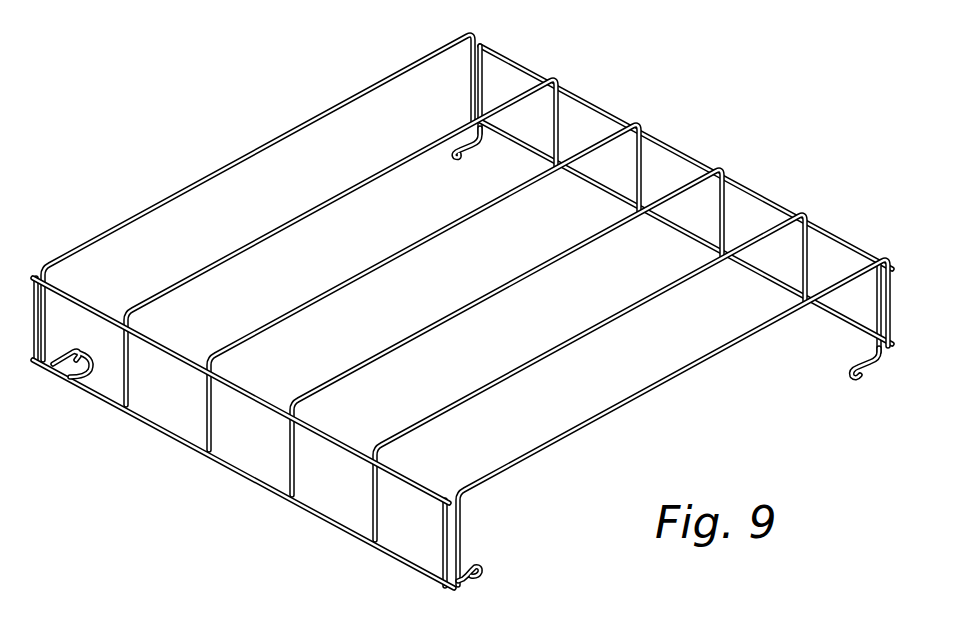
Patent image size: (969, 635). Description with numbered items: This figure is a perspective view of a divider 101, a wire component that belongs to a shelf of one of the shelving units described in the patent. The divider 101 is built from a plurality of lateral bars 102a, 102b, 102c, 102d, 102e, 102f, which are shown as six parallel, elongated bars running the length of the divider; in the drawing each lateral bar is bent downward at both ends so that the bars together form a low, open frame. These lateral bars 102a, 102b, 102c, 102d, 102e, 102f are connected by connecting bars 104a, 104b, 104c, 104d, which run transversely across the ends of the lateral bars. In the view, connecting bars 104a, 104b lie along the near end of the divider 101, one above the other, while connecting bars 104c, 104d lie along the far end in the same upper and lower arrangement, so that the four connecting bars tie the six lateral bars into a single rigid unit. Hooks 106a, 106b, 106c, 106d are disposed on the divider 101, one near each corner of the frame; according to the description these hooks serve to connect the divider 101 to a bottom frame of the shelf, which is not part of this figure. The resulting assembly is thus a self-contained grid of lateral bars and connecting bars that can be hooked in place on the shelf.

The divider 101 is at (469, 313).
The lateral bar 102a is at (257, 147).
The lateral bar 102b is at (358, 182).
The lateral bar 102c is at (363, 271).
The lateral bar 102d is at (477, 303).
The lateral bar 102e is at (575, 341).
The lateral bar 102f is at (623, 403).
The connecting bar 104a is at (234, 471).
The connecting bar 104b is at (257, 396).
The connecting bar 104c is at (760, 195).
The connecting bar 104d is at (658, 227).
The hook 106a is at (86, 377).
The hook 106b is at (453, 156).
The hook 106c is at (863, 378).
The hook 106d is at (481, 574).